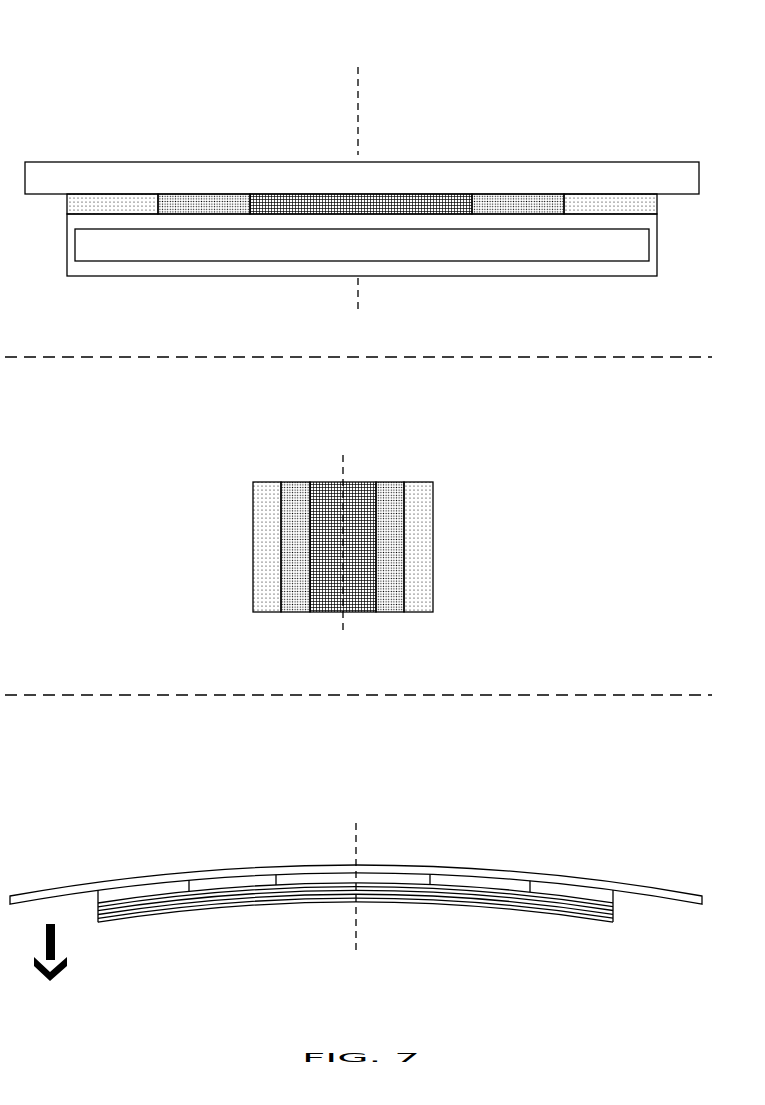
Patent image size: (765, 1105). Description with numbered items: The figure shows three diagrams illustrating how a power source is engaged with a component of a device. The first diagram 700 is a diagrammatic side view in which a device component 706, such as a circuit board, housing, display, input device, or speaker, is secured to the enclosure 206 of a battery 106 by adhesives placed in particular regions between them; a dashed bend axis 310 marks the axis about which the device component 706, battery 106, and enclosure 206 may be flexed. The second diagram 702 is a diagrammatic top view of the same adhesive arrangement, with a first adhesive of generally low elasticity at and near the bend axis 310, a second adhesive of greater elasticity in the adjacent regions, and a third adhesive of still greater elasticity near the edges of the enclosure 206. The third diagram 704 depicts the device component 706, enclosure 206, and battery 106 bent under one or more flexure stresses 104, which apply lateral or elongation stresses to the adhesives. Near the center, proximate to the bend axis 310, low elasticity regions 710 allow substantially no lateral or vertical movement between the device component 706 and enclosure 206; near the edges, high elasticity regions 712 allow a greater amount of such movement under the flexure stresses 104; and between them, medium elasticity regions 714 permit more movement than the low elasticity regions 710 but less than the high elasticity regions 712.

The first diagram 700 is at (536, 32).
The second diagram 702 is at (529, 395).
The third diagram 704 is at (539, 735).
The device component 706 is at (440, 186).
The enclosure 206 is at (197, 276).
The battery 106 is at (403, 253).
The bend axis 310 is at (358, 148).
The low elasticity region 710 is at (398, 880).
The high elasticity region 712 is at (585, 840).
The medium elasticity region 714 is at (227, 882).
The flexure stress 104 is at (54, 943).